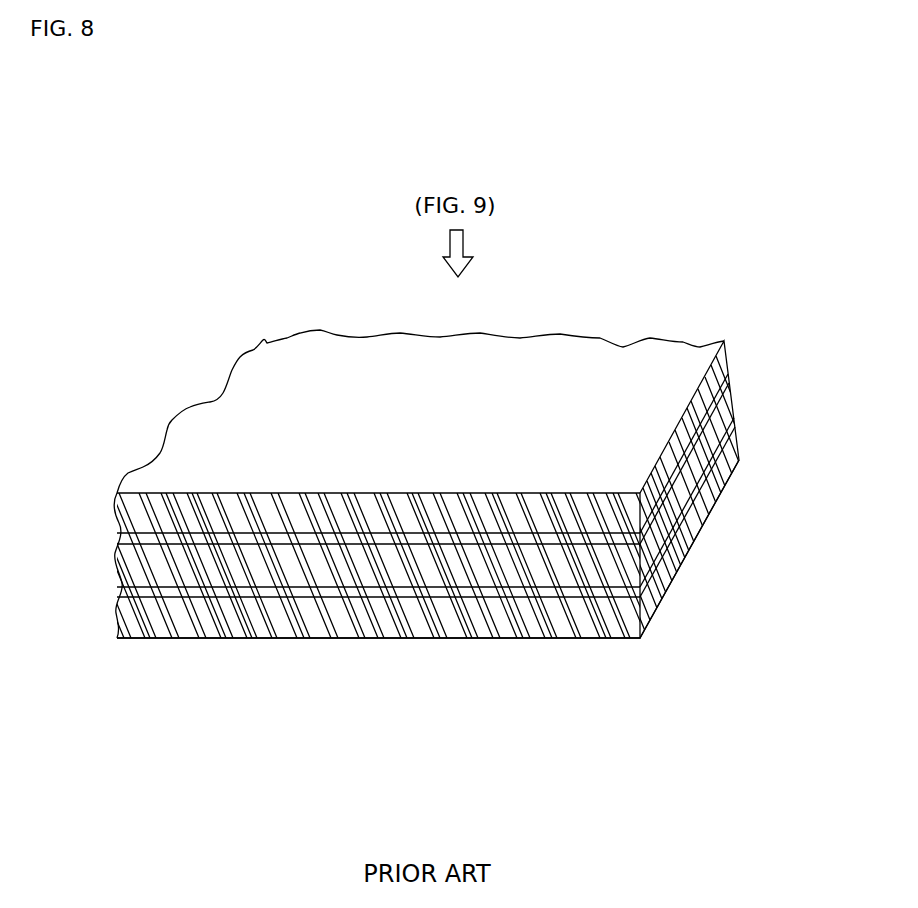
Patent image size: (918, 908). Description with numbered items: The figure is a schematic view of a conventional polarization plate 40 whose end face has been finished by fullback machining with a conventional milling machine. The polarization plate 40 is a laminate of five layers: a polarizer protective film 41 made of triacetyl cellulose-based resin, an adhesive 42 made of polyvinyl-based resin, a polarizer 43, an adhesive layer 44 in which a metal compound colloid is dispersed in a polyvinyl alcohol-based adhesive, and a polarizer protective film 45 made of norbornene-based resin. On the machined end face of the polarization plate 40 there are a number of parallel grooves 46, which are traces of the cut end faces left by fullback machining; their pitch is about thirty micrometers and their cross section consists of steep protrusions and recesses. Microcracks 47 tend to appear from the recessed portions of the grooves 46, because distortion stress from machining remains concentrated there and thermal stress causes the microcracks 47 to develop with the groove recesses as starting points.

The polarization plate 40 is at (403, 803).
The polarizer protective film 41 is at (731, 352).
The adhesive 42 is at (728, 387).
The polarizer 43 is at (730, 413).
The adhesive layer 44 is at (733, 433).
The polarizer protective film 45 is at (737, 447).
The grooves 46 is at (740, 453).
The microcracks 47 is at (366, 528).